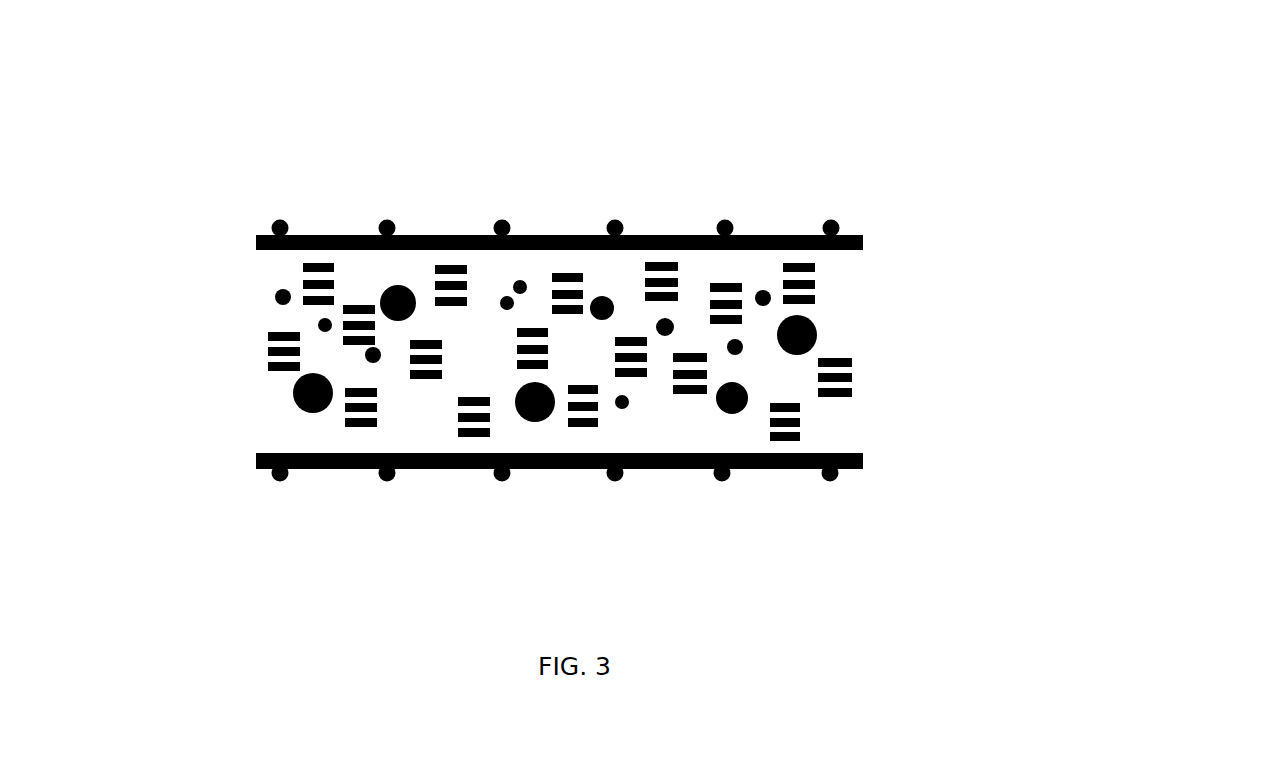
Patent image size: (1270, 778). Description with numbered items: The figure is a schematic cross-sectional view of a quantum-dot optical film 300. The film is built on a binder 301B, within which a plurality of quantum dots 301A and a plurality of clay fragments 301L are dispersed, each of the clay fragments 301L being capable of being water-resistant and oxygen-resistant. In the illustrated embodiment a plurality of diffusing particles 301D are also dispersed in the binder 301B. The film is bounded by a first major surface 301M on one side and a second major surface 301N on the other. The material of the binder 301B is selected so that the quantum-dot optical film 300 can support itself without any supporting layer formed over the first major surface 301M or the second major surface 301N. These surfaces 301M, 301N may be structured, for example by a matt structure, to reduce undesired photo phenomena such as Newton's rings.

The quantum-dot optical film 300 is at (755, 253).
The quantum dots 301A is at (272, 291).
The binder 301B is at (355, 272).
The diffusing particles 301D is at (290, 402).
The clay fragments 301L is at (717, 275).
The first major surface 301M is at (840, 217).
The second major surface 301N is at (838, 482).